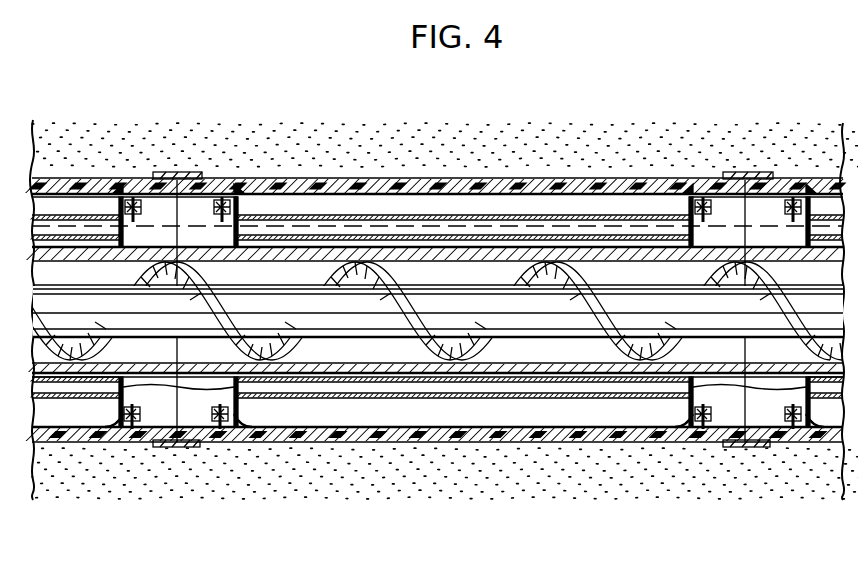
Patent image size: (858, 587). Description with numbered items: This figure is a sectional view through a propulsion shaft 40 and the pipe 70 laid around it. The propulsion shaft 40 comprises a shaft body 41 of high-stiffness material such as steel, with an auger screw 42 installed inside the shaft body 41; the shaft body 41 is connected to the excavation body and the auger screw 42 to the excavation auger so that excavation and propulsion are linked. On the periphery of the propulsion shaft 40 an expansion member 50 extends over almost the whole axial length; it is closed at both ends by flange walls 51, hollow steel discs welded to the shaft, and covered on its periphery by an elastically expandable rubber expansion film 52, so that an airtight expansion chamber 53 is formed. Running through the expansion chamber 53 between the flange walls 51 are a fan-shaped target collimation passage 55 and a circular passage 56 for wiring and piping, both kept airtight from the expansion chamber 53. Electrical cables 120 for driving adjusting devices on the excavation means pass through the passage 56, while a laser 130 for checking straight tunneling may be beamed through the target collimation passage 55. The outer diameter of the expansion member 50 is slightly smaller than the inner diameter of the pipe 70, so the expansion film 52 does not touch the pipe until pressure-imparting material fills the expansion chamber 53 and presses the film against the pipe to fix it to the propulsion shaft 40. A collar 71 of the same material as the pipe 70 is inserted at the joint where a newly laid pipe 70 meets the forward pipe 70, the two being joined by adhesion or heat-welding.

The propulsion shaft 40 is at (313, 377).
The shaft body 41 is at (345, 373).
The auger screw 42 is at (530, 317).
The expansion member 50 is at (463, 203).
The flange wall 51 is at (233, 243).
The expansion film 52 is at (383, 187).
The expansion chamber 53 is at (512, 200).
The target collimation passage 55 is at (620, 217).
The passage 56 is at (600, 400).
The pipe to be laid 70 is at (282, 177).
The collar 71 is at (170, 175).
The electrical cables 120 is at (727, 393).
The laser 130 is at (760, 227).